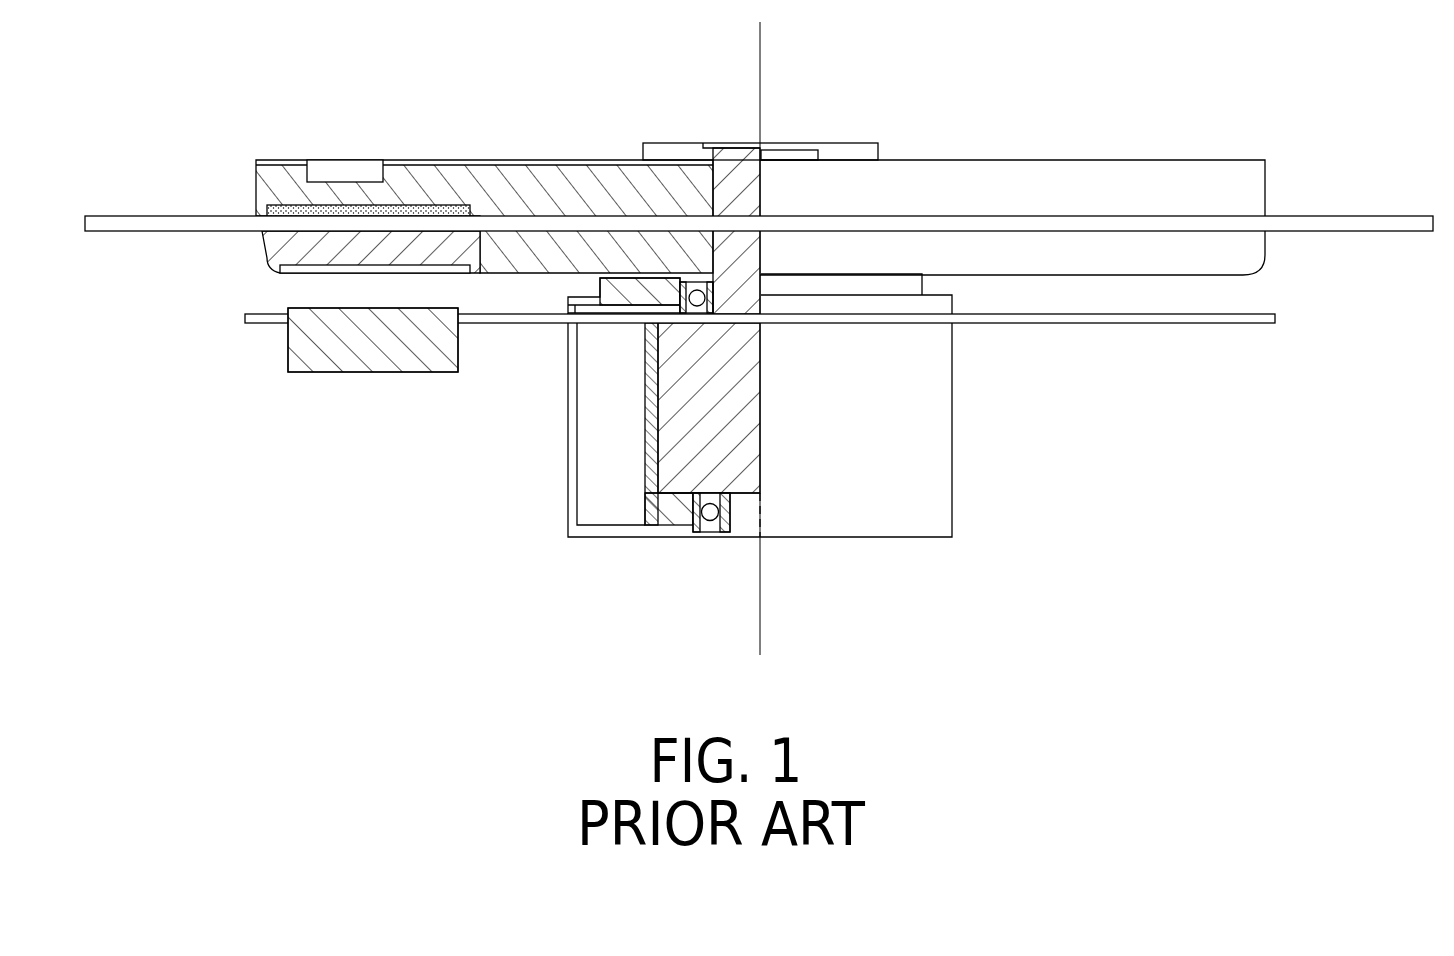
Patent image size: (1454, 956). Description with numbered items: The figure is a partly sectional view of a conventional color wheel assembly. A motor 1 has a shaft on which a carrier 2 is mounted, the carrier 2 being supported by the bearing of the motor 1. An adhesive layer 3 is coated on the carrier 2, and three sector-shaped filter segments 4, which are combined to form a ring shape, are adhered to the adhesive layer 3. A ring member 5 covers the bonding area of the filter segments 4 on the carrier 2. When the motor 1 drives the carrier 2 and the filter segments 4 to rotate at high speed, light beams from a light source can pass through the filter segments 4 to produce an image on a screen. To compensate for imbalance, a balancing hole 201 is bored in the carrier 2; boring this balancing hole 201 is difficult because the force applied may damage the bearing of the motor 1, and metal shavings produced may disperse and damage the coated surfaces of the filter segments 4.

The motor 1 is at (953, 418).
The carrier 2 is at (606, 150).
The balancing hole 201 is at (372, 165).
The adhesive layer 3 is at (333, 180).
The sector-shaped filter segments 4 is at (156, 195).
The ring member 5 is at (245, 262).